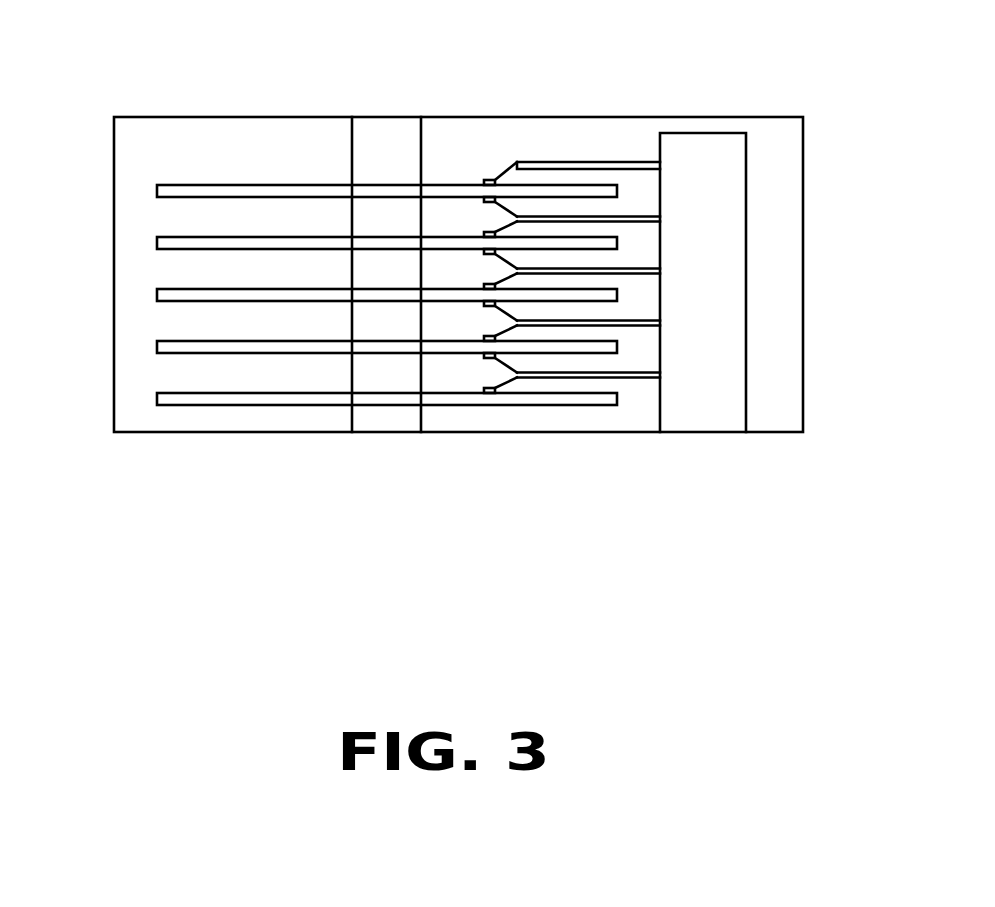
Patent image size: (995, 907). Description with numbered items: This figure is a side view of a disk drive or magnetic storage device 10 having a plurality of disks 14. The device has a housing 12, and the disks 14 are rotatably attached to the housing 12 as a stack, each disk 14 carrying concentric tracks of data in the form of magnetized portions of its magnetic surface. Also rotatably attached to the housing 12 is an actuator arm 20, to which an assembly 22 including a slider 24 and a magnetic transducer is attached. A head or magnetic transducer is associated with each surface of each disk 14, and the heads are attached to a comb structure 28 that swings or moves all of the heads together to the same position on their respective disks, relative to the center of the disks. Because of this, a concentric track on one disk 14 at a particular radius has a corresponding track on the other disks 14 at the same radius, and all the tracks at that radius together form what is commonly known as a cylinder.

The magnetic storage device 10 is at (710, 90).
The housing 12 is at (801, 338).
The disk 14 is at (157, 188).
The actuator arm 20 is at (572, 161).
The assembly 22 is at (508, 172).
The slider 24 is at (486, 178).
The comb structure 28 is at (704, 397).